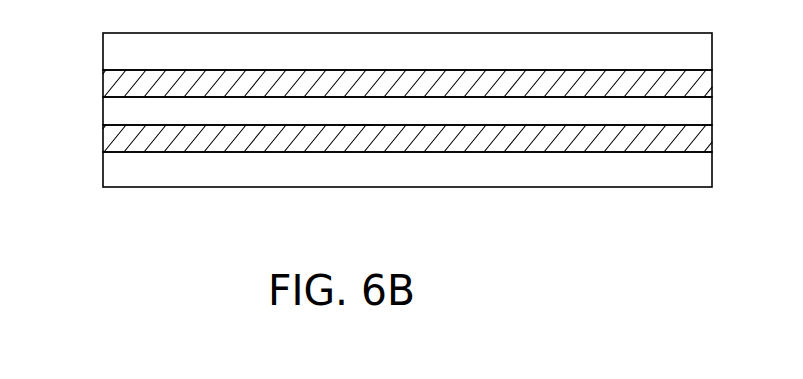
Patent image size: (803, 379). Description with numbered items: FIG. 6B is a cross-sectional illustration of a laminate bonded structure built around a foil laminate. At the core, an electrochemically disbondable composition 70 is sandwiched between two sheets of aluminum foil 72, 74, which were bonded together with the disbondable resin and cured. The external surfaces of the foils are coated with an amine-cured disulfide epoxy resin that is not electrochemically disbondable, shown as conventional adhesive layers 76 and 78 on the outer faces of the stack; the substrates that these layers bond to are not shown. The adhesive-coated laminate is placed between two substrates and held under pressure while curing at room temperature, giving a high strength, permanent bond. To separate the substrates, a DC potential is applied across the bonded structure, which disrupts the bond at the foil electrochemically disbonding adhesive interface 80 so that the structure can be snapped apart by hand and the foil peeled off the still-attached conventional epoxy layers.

The electrochemically disbondable composition 70 is at (117, 110).
The foil 72 is at (117, 84).
The foil 74 is at (117, 140).
The conventional adhesive layer 76 is at (117, 47).
The conventional adhesive layer 78 is at (114, 173).
The foil electrochemically disbonding adhesive interface 80 is at (345, 124).